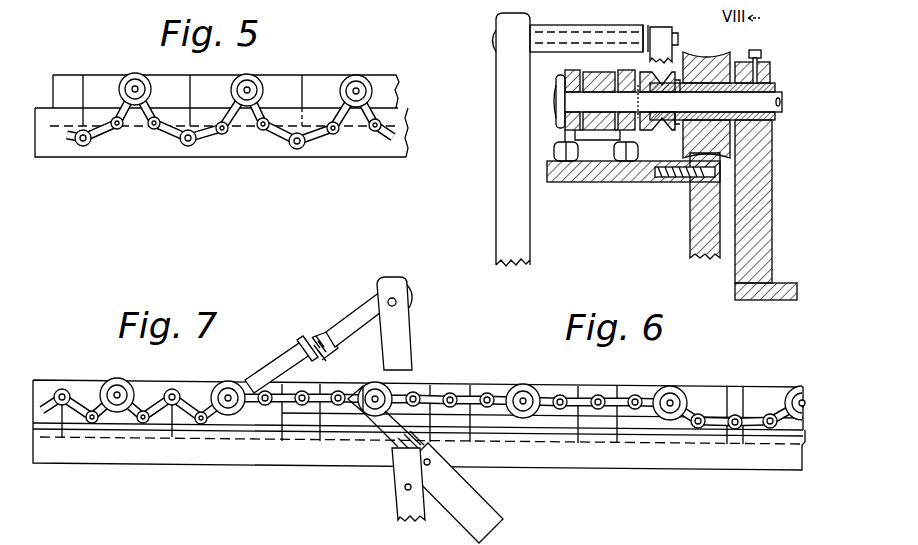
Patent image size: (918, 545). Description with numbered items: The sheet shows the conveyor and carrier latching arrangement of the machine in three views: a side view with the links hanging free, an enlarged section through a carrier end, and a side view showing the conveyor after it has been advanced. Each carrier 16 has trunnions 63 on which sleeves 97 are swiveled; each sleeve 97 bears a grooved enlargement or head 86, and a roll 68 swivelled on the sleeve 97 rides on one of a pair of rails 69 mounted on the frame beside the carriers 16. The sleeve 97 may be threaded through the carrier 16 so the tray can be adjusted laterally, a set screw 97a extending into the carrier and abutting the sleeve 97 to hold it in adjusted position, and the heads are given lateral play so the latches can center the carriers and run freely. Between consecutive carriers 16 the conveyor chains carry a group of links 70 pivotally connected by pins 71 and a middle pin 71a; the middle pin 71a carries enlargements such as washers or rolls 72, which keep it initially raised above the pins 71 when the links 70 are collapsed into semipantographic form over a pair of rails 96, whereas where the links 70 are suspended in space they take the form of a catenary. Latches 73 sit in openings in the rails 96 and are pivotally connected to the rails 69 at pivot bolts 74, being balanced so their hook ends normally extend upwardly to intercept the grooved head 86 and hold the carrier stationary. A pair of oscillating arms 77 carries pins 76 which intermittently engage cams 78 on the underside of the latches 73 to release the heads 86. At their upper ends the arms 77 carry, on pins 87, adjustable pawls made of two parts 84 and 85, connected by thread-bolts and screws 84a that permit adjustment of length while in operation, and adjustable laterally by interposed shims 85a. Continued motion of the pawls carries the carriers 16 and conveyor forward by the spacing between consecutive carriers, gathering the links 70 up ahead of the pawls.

In FIG. 5, the carrier 16 is at (312, 80).
In FIG. 6, the carrier 16 is at (735, 290).
In FIG. 7, the carrier 16 is at (183, 385).
In FIG. 6, the trunnion 63 is at (775, 86).
In FIG. 5, the roll 68 is at (135, 73).
In FIG. 6, the roll 68 is at (730, 55).
In FIG. 7, the roll 68 is at (125, 380).
In FIG. 6, the rail 69 is at (690, 219).
In FIG. 7, the rail 69 is at (318, 464).
In FIG. 5, the link 70 is at (181, 131).
In FIG. 6, the link 70 is at (572, 72).
In FIG. 7, the link 70 is at (75, 412).
In FIG. 6, the pin 71 is at (557, 112).
In FIG. 5, the middle pin 71a is at (190, 147).
In FIG. 7, the middle pin 71a is at (62, 389).
In FIG. 5, the roll 72 is at (197, 143).
In FIG. 7, the roll 72 is at (68, 400).
In FIG. 6, the latch 73 is at (794, 6).
In FIG. 7, the latch 73 is at (466, 487).
In FIG. 6, the pivot bolt 74 is at (796, 12).
In FIG. 7, the pivot bolt 74 is at (428, 468).
In FIG. 7, the pin 76 is at (406, 489).
In FIG. 6, the oscillating arm 77 is at (497, 175).
In FIG. 7, the oscillating arm 77 is at (407, 343).
In FIG. 7, the cam 78 is at (448, 512).
In FIG. 7, the pawl part 84 is at (270, 355).
In FIG. 7, the thread-bolt and screw 84a is at (311, 334).
In FIG. 6, the pawl part 85 is at (672, 27).
In FIG. 7, the pawl part 85 is at (367, 295).
In FIG. 6, the shim 85a is at (647, 27).
In FIG. 6, the grooved head 86 is at (668, 130).
In FIG. 6, the pin 87 is at (494, 42).
In FIG. 7, the pin 87 is at (396, 303).
In FIG. 6, the rail 96 is at (650, 182).
In FIG. 7, the rail 96 is at (183, 430).
In FIG. 6, the sleeve 97 is at (772, 117).
In FIG. 6, the set screw 97a is at (762, 52).